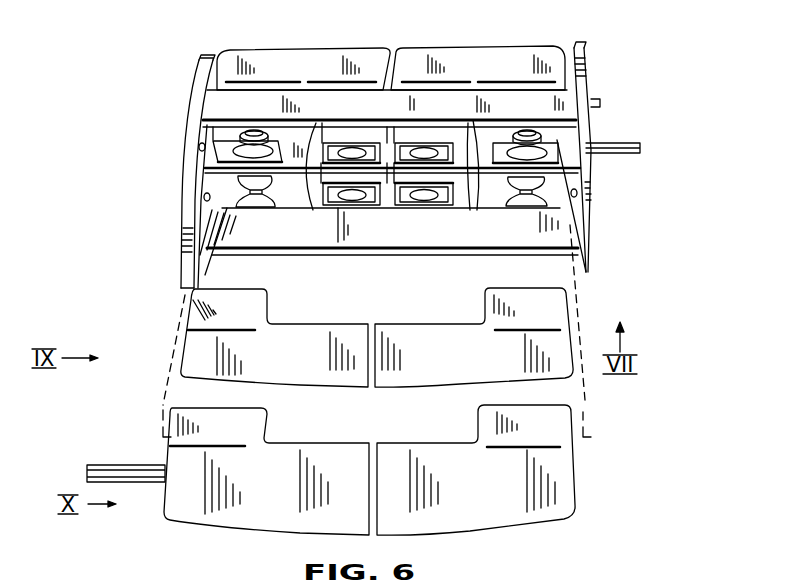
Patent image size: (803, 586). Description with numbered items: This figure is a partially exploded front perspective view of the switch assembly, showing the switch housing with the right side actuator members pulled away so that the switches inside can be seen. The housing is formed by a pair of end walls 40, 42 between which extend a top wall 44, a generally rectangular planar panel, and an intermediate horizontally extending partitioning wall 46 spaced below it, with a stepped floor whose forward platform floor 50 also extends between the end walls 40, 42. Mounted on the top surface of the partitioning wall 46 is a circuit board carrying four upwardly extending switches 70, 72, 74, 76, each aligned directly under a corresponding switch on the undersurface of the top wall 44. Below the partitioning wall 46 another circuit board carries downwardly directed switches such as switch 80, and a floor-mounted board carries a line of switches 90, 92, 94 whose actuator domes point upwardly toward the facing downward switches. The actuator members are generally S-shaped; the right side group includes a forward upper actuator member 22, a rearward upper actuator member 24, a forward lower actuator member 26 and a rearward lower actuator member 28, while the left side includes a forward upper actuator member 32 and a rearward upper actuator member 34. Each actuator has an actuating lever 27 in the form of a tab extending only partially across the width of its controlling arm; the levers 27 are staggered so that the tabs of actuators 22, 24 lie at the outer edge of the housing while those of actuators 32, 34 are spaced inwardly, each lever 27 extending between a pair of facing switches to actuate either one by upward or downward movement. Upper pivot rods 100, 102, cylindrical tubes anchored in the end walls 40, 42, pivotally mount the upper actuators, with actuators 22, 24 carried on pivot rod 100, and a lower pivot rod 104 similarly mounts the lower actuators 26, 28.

The forward upper actuator member 22 is at (567, 377).
The rearward upper actuator member 24 is at (177, 377).
The forward lower actuator member 26 is at (573, 522).
The rearward lower actuator member 28 is at (195, 522).
The actuating lever 27 is at (311, 208).
The forward upper actuator member 32 is at (492, 62).
The rearward upper actuator member 34 is at (291, 62).
The end wall 40 is at (590, 195).
The end wall 42 is at (192, 115).
The top wall 44 is at (228, 105).
The partitioning wall 46 is at (508, 203).
The forward platform floor 50 is at (568, 224).
The switch 70 is at (276, 143).
The switch 72 is at (367, 143).
The switch 74 is at (449, 143).
The switch 76 is at (546, 143).
The switch 80 is at (238, 176).
The switch 90 is at (258, 201).
The switch 92 is at (356, 200).
The switch 94 is at (432, 200).
The upper pivot rod 100 is at (632, 150).
The upper pivot rod 102 is at (600, 102).
The lower pivot rod 104 is at (90, 463).